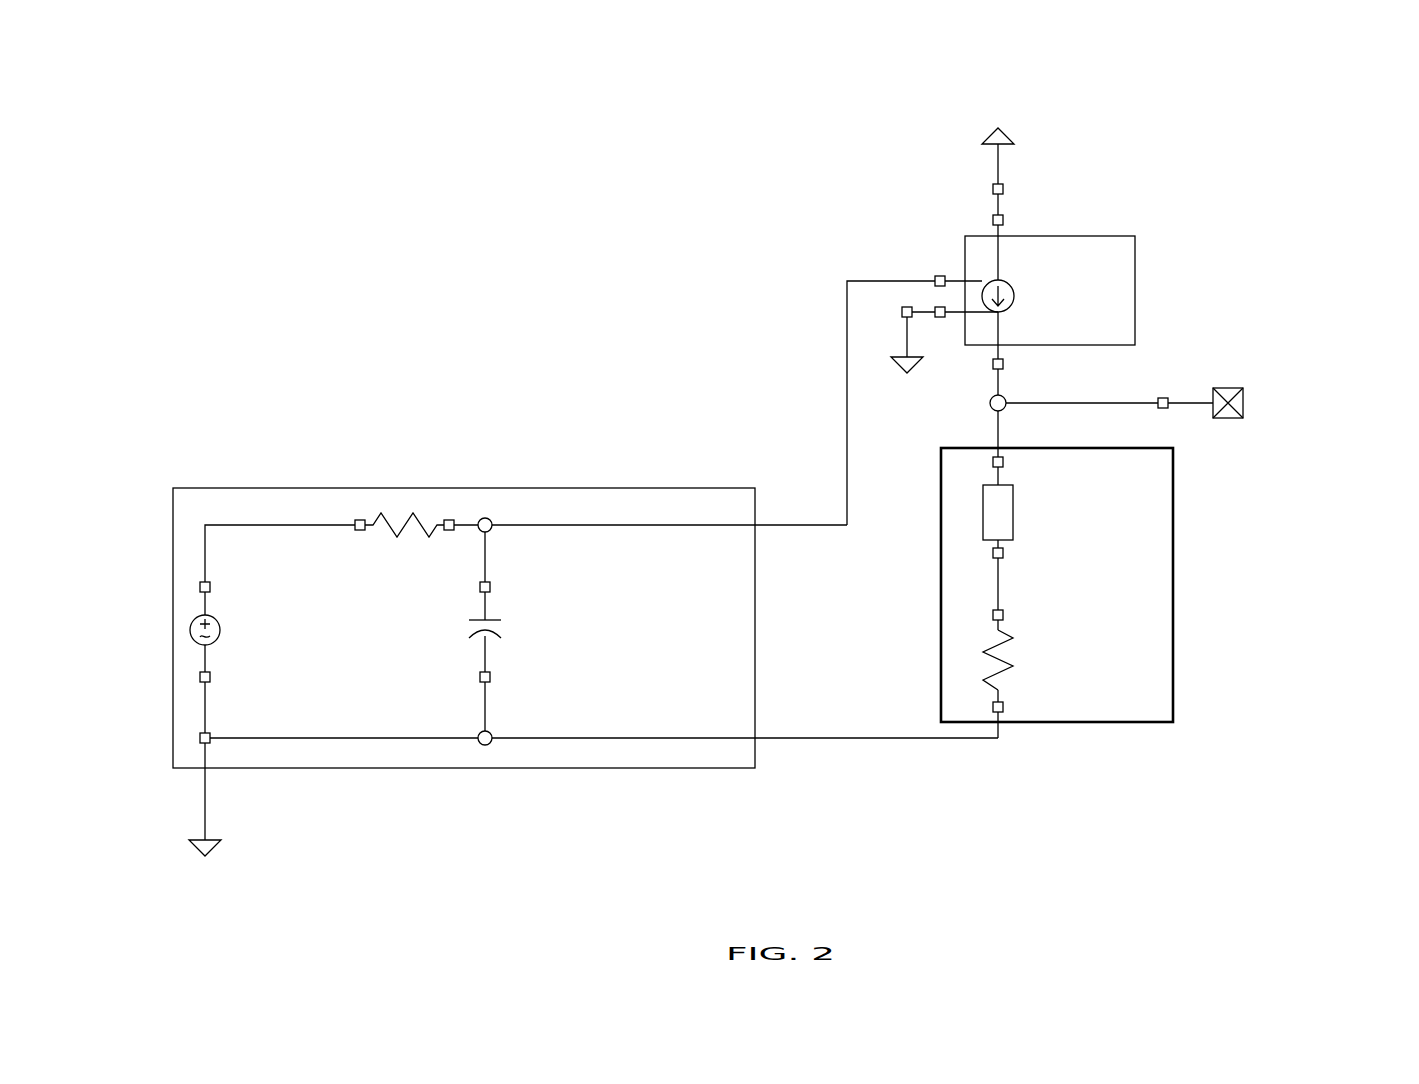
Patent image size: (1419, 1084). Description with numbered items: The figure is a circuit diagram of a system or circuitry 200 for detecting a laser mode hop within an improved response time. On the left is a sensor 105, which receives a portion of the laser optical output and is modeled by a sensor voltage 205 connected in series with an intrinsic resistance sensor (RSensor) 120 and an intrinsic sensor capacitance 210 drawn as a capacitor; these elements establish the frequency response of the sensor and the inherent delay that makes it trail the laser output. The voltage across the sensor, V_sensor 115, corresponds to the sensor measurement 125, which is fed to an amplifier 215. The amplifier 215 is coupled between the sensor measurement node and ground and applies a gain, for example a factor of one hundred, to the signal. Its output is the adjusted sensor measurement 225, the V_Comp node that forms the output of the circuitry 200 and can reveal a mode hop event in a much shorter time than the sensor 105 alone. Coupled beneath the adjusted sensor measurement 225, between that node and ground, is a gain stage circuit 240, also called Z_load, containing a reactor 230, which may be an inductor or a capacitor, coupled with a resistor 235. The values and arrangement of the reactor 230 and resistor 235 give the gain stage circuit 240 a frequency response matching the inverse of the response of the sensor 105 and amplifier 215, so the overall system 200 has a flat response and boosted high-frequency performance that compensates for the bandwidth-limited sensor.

The system or circuitry 200 is at (186, 137).
The sensor 105 is at (585, 669).
The resistance sensor (RSensor) 120 is at (403, 542).
The sensor voltage 205 is at (263, 662).
The sensor capacitance 210 is at (604, 631).
The V_sensor 115 is at (831, 628).
The sensor measurement 125 is at (806, 500).
The amplifier 215 is at (1000, 248).
The adjusted sensor measurement 225 is at (1190, 452).
The reactor 230 is at (1066, 522).
The resistor 235 is at (1062, 661).
The gain stage circuit 240 is at (1170, 576).